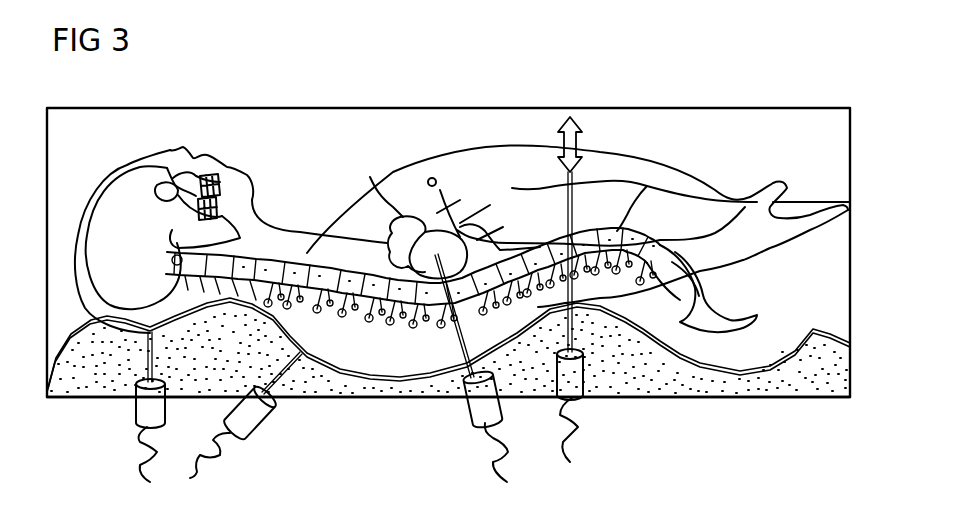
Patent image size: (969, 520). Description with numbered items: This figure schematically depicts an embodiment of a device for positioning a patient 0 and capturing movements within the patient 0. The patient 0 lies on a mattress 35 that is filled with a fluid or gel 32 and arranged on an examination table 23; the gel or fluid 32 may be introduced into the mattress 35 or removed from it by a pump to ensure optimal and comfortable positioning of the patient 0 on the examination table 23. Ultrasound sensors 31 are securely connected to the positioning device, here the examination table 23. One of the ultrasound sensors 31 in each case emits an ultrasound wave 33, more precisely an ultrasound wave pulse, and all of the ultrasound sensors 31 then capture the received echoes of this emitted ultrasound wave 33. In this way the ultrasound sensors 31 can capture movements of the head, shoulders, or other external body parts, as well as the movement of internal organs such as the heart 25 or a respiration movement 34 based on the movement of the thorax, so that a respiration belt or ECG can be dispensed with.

The examination object 0 is at (678, 177).
The examination table 23 is at (370, 399).
The heart 25 is at (407, 230).
The ultrasound sensors 31 is at (135, 410).
The fluid or gel 32 is at (653, 390).
The ultrasound wave 33 is at (160, 365).
The respiration movement 34 is at (581, 138).
The mattress 35 is at (85, 326).